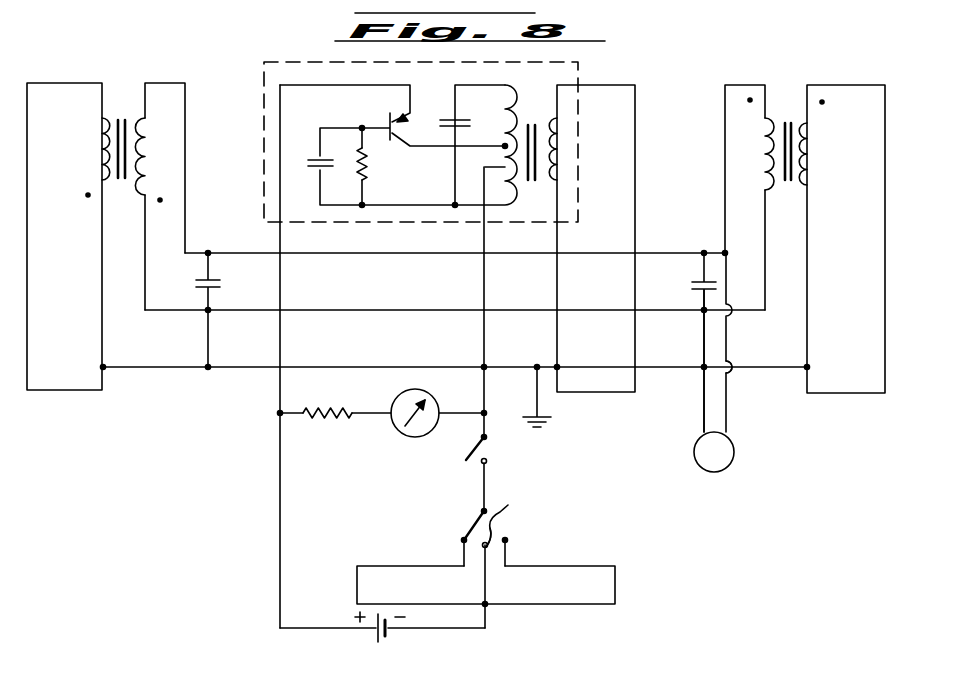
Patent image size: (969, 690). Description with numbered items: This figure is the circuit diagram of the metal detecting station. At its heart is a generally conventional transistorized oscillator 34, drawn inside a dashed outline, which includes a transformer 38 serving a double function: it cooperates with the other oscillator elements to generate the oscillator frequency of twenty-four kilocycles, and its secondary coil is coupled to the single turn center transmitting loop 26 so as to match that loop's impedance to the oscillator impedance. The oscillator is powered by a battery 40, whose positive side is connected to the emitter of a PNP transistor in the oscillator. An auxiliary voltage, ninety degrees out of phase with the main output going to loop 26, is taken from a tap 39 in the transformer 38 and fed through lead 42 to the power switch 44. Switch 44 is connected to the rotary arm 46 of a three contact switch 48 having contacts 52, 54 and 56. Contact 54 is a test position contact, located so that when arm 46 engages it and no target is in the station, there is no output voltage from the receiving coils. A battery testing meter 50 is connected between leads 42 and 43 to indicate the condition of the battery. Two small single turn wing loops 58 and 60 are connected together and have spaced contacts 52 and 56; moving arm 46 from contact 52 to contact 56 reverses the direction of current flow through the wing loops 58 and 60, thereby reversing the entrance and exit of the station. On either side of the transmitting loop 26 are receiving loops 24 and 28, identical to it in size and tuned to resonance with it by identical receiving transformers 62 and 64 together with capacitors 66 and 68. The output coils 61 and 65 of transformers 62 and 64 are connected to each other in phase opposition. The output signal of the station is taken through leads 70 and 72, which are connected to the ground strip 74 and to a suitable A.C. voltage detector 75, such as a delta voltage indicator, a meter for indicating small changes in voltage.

The receiving loop 24 is at (60, 392).
The center transmitting loop 26 is at (607, 392).
The receiving loop 28 is at (838, 393).
The transistorized oscillator 34 is at (268, 61).
The transformer 38 is at (538, 135).
The tap 39 is at (515, 176).
The battery 40 is at (386, 640).
The lead 42 is at (487, 336).
The lead 43 is at (279, 447).
The power switch 44 is at (490, 448).
The rotary arm 46 is at (478, 521).
The three contact switch 48 is at (508, 530).
The battery testing meter 50 is at (415, 437).
The contact 52 is at (460, 541).
The test position contact 54 is at (508, 514).
The contact 56 is at (509, 541).
The wing loop 58 is at (386, 566).
The wing loop 60 is at (615, 566).
The output coil 61 is at (146, 160).
The receiving transformer 62 is at (122, 100).
The receiving transformer 64 is at (788, 108).
The output coil 65 is at (770, 160).
The capacitor 66 is at (221, 284).
The capacitor 68 is at (696, 286).
The lead 70 is at (730, 424).
The lead 72 is at (700, 423).
The ground strip 74 is at (740, 372).
The voltage detector 75 is at (727, 452).